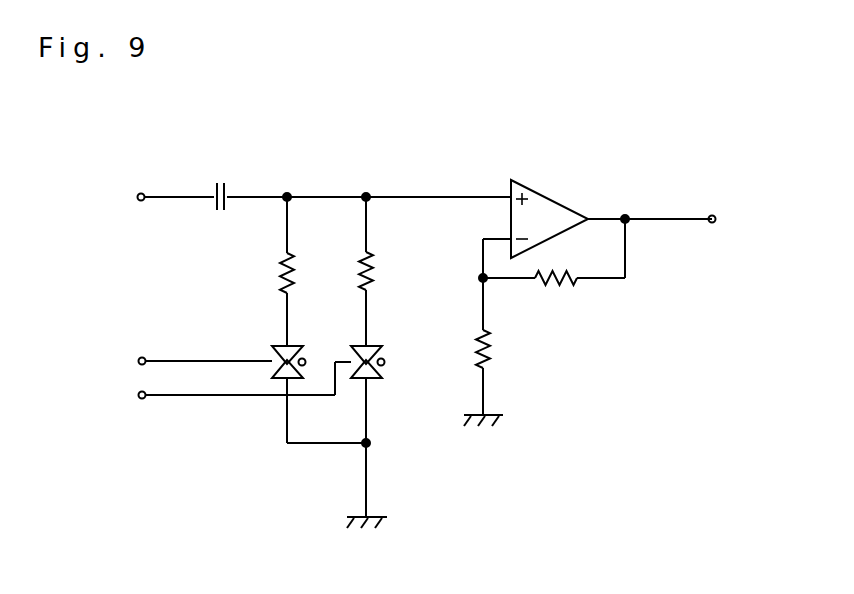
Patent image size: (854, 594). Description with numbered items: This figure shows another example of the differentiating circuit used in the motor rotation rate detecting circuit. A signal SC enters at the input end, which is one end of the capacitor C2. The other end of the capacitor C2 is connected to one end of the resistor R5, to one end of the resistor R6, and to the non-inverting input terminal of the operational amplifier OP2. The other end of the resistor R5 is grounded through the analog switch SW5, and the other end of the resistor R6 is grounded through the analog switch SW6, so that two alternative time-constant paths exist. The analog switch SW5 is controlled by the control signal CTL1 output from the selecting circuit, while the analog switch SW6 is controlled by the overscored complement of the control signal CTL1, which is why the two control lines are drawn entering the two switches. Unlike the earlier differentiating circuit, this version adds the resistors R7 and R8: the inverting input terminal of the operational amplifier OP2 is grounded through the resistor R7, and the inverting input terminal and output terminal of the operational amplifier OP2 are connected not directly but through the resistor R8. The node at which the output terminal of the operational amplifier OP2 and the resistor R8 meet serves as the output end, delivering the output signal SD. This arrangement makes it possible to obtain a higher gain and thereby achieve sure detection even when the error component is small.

The capacitor C2 is at (218, 181).
The resistor R5 is at (278, 260).
The resistor R6 is at (382, 269).
The resistor R7 is at (497, 349).
The resistor R8 is at (555, 290).
The operational amplifier OP2 is at (541, 195).
The analog switch SW5 is at (271, 352).
The analog switch SW6 is at (389, 359).
The input signal terminal SC is at (153, 197).
The output signal terminal SD is at (731, 220).
The control signal CTL1 is at (132, 382).